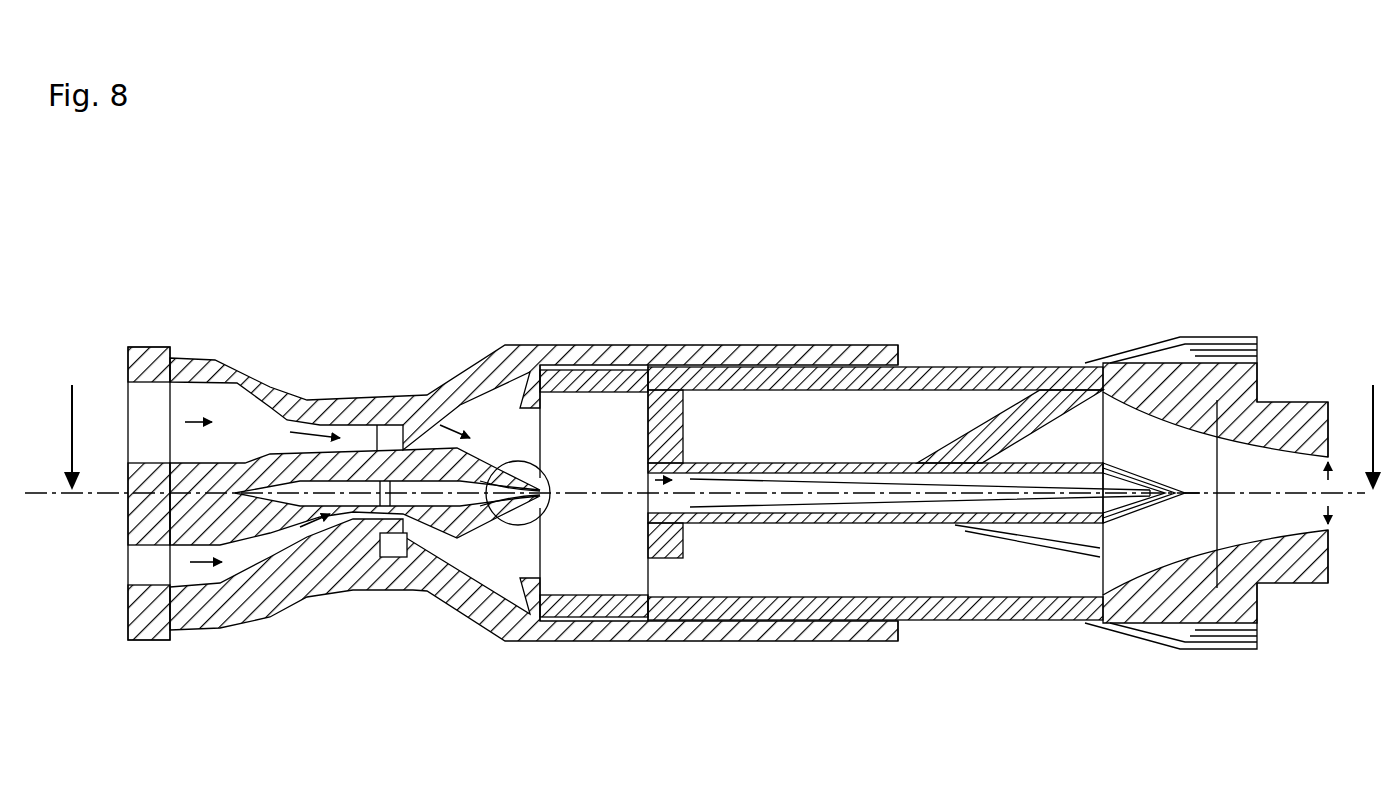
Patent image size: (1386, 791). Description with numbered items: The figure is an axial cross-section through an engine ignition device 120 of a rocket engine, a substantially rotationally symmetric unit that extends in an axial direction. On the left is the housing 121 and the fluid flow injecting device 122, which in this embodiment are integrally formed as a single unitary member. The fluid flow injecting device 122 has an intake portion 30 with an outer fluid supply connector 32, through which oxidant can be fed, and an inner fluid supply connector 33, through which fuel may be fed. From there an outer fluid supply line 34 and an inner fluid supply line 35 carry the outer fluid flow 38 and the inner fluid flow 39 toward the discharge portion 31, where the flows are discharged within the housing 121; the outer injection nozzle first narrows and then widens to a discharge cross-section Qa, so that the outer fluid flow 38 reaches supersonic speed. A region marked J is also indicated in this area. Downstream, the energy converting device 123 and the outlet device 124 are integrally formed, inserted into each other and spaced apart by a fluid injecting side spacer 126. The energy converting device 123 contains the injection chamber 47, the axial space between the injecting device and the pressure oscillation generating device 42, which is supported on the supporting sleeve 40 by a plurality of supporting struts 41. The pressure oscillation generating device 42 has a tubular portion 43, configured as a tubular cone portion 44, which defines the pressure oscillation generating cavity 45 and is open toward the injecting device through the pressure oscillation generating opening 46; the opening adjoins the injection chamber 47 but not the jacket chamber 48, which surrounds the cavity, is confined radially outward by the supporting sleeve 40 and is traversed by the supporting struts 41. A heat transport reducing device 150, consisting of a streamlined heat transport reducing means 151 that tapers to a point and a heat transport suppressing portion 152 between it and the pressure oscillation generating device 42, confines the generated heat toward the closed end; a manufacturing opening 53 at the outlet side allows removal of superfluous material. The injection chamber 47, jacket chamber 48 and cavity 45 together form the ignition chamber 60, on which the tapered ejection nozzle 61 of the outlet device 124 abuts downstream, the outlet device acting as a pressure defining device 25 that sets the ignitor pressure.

The engine ignition device 120 is at (382, 165).
The intake portion 30 is at (160, 342).
The outer fluid supply connector 32 is at (126, 422).
The inner fluid supply connector 33 is at (130, 575).
The outer fluid supply line 34 is at (205, 418).
The inner fluid supply line 35 is at (215, 575).
The outer fluid flow 38 is at (298, 405).
The inner fluid flow 39 is at (300, 580).
The fluid flow injecting device 122 is at (438, 432).
The discharge portion 31 is at (518, 442).
The housing 121 is at (540, 340).
The annular channel J is at (505, 555).
The fluid injecting side spacer 126 is at (606, 372).
The injection chamber 47 is at (577, 570).
The pressure oscillation generating cavity 45 is at (652, 480).
The pressure oscillation generating opening 46 is at (648, 518).
The energy converting device 123 is at (945, 362).
The supporting struts 41 is at (683, 400).
The pressure oscillation generating device 42 is at (745, 458).
The tubular portion 43 is at (845, 525).
The heat transport reducing means 151 is at (920, 525).
The tubular cone portion 44 is at (1015, 520).
The heat transport suppressing portion 152 is at (1085, 520).
The heat transport reducing device 150 is at (1137, 462).
The manufacturing opening 53 is at (1195, 497).
The ignition chamber 60 is at (1192, 438).
The outlet device 124 is at (1275, 398).
The supporting sleeve 40 is at (990, 362).
The tapered ejection nozzle 61 is at (1178, 560).
The pressure defining device 25 is at (1290, 590).
The discharge cross-section Qa is at (1340, 522).
The jacket chamber 48 is at (720, 575).